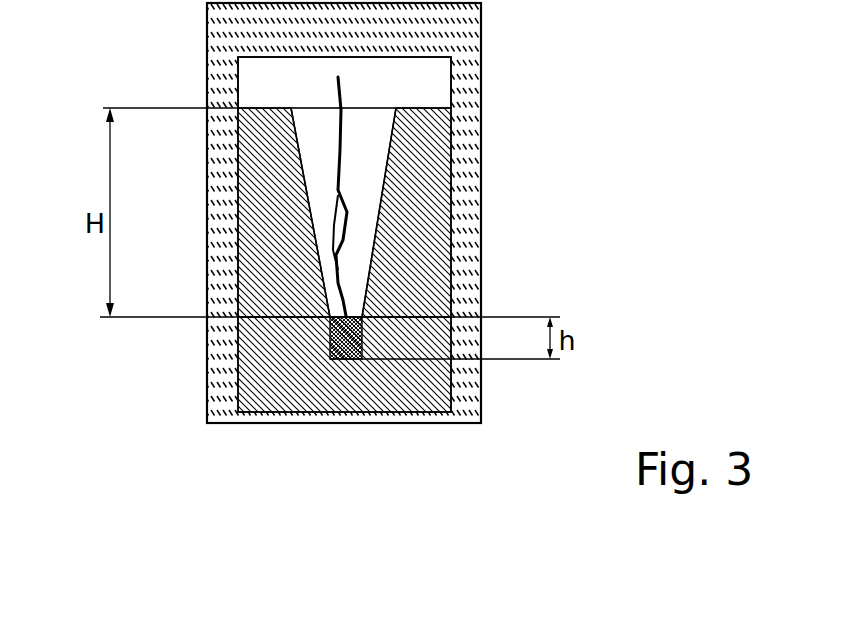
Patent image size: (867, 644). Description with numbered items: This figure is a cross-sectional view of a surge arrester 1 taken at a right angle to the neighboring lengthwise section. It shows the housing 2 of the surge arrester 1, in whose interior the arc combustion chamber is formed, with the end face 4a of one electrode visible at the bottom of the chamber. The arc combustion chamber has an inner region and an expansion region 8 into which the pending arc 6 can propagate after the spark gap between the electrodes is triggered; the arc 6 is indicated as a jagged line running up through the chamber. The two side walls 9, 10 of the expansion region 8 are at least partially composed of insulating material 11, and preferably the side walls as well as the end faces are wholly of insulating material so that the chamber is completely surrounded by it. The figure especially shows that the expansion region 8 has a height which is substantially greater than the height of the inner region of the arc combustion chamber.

The surge arrester 1 is at (170, 465).
The housing 2 is at (465, 378).
The end face 4a is at (363, 316).
The arc 6 is at (335, 169).
The expansion region 8 is at (395, 118).
The side wall 9 is at (307, 210).
The side wall 10 is at (387, 190).
The insulating material 11 is at (278, 346).